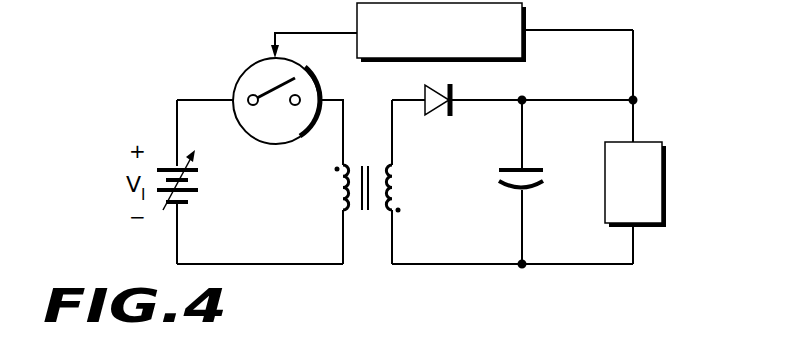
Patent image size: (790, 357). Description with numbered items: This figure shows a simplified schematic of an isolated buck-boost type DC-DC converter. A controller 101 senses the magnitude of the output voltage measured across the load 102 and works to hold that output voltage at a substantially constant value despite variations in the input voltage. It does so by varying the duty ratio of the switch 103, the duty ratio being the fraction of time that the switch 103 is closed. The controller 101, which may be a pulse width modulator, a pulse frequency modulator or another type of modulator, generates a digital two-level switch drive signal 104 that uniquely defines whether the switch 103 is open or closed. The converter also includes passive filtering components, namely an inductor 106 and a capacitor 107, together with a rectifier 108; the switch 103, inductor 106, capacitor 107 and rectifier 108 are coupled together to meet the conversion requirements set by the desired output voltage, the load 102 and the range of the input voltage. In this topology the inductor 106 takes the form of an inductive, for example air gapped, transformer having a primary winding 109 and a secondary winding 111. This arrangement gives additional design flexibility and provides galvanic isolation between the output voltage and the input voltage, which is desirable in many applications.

The controller 101 is at (522, 50).
The load 102 is at (656, 141).
The switch 103 is at (243, 68).
The switch drive signal 104 is at (322, 20).
The inductor 106 is at (367, 237).
The capacitor 107 is at (540, 168).
The rectifier 108 is at (432, 112).
The primary winding 109 is at (340, 188).
The secondary winding 111 is at (416, 189).